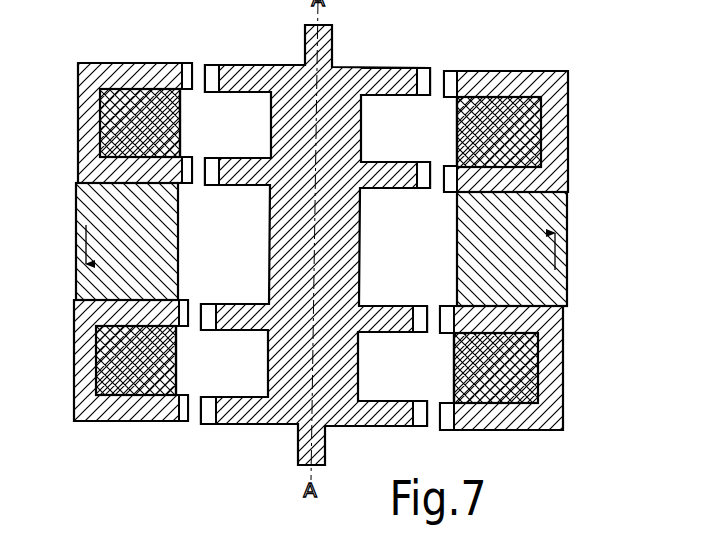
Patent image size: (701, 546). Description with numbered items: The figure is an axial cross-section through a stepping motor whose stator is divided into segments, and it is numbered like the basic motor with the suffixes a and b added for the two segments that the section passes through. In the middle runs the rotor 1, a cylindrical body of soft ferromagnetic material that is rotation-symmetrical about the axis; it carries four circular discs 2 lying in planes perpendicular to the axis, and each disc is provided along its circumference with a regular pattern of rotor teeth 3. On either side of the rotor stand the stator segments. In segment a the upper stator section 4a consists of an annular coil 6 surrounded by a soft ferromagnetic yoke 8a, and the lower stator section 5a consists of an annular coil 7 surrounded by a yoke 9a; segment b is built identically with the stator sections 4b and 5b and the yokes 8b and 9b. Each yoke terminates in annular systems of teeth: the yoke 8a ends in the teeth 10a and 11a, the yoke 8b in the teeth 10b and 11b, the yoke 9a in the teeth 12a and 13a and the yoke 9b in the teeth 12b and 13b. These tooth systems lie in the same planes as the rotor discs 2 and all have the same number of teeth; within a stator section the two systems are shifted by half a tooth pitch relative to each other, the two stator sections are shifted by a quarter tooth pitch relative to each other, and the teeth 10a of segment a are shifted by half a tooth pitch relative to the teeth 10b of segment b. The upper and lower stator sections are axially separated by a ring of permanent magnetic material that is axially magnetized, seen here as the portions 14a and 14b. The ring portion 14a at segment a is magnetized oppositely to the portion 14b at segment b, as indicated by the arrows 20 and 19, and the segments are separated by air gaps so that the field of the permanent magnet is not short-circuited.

The rotor 1 is at (333, 82).
The circular discs 2 is at (252, 76).
The rotor teeth 3 is at (212, 74).
The stator section of segment a 4a is at (123, 103).
The stator section of segment b 4b is at (530, 121).
The stator section of segment a 5a is at (130, 387).
The stator section of segment b 5b is at (495, 392).
The annular coil 6 is at (512, 110).
The annular coil 7 is at (529, 352).
The yoke 8a is at (93, 120).
The yoke 8b is at (557, 161).
The yoke 9a is at (88, 379).
The yoke 9b is at (553, 400).
The stator teeth 10a is at (186, 74).
The stator teeth 10b is at (449, 83).
The stator teeth 11a is at (187, 167).
The stator teeth 11b is at (450, 170).
The stator teeth 12a is at (184, 309).
The stator teeth 12b is at (451, 310).
The stator teeth 13a is at (178, 405).
The stator teeth 13b is at (448, 408).
The permanent magnetic ring 14a is at (92, 196).
The permanent magnetic ring 14b is at (553, 203).
The arrow 19 is at (556, 250).
The arrow 20 is at (86, 239).